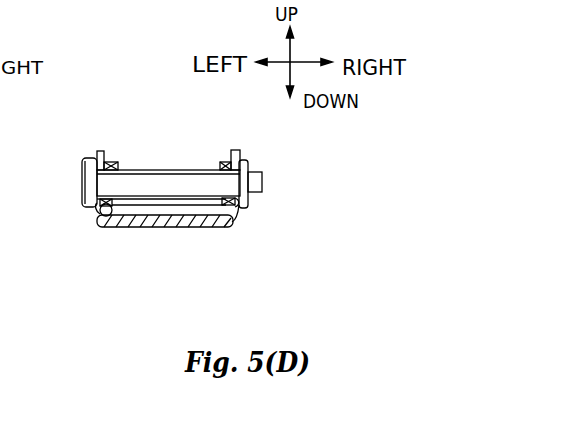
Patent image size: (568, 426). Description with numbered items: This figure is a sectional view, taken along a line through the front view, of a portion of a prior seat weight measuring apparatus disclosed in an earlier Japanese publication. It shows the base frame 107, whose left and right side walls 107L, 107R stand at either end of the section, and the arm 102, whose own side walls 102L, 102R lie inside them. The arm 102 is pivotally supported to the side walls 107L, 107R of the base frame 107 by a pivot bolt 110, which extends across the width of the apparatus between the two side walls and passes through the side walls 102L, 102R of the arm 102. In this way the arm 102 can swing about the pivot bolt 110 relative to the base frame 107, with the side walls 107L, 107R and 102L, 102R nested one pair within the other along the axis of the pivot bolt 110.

The arm 102 is at (100, 220).
The side wall of arm 102L is at (124, 156).
The side wall of arm 102R is at (222, 157).
The base frame 107 is at (205, 228).
The side wall of base frame 107L is at (95, 153).
The side wall of base frame 107R is at (240, 152).
The pivot bolt 110 is at (169, 181).